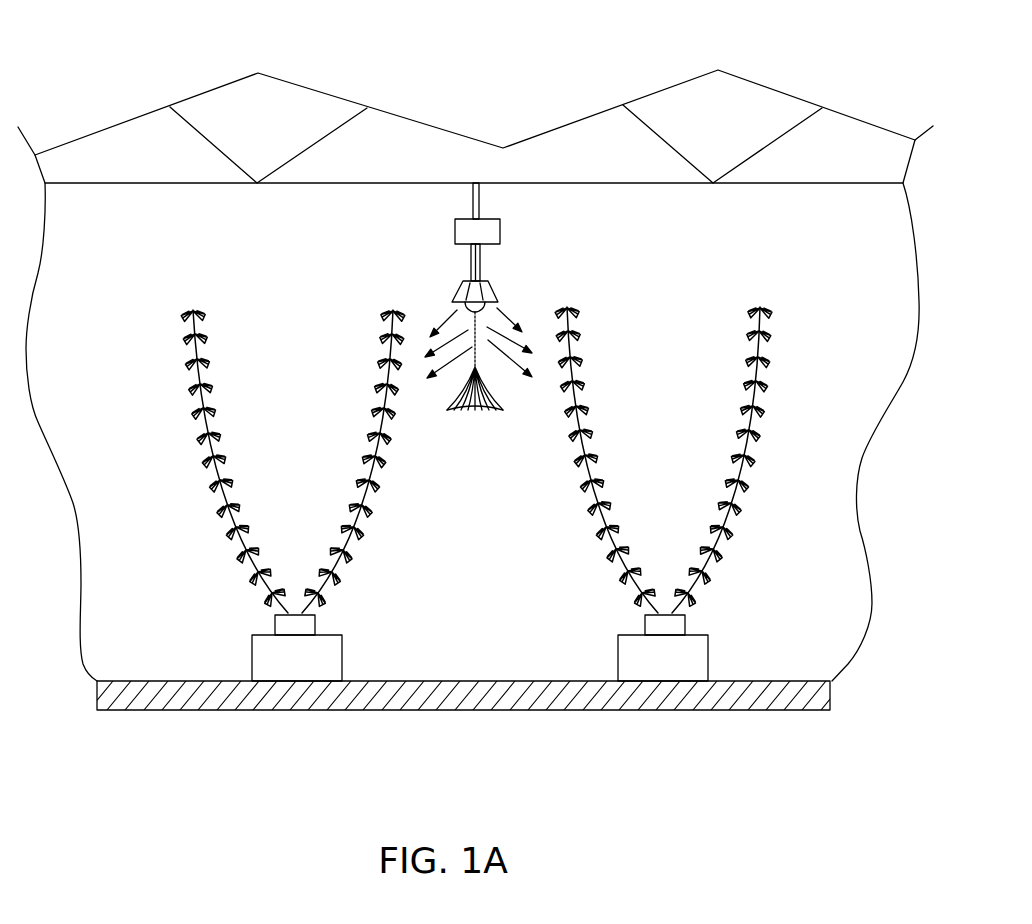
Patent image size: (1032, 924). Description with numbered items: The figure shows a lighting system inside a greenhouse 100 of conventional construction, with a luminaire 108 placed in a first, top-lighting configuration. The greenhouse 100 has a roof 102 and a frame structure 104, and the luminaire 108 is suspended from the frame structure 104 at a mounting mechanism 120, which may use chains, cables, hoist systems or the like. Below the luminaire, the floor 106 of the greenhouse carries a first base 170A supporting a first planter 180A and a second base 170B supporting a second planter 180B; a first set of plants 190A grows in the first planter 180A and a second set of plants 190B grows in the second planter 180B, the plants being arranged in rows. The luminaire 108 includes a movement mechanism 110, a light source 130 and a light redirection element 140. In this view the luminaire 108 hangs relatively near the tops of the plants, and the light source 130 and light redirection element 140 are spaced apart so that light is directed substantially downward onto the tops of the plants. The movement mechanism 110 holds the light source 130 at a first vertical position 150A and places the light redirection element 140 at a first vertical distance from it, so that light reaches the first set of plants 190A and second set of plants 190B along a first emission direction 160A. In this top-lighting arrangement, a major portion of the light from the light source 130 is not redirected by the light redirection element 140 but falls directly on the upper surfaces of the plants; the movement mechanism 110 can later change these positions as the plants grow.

The greenhouse 100 is at (573, 65).
The roof 102 is at (213, 83).
The frame structure 104 is at (325, 130).
The floor 106 is at (636, 710).
The luminaire 108 is at (443, 272).
The movement mechanism 110 is at (500, 222).
The mounting mechanism 120 is at (474, 210).
The light source 130 is at (488, 288).
The light redirection element 140 is at (490, 400).
The first vertical position 150A is at (590, 275).
The first emission direction 160A is at (505, 307).
The first base 170A is at (342, 655).
The second base 170B is at (708, 655).
The first planter 180A is at (275, 622).
The second planter 180B is at (685, 622).
The first set of plants 190A is at (192, 465).
The second set of plants 190B is at (765, 465).